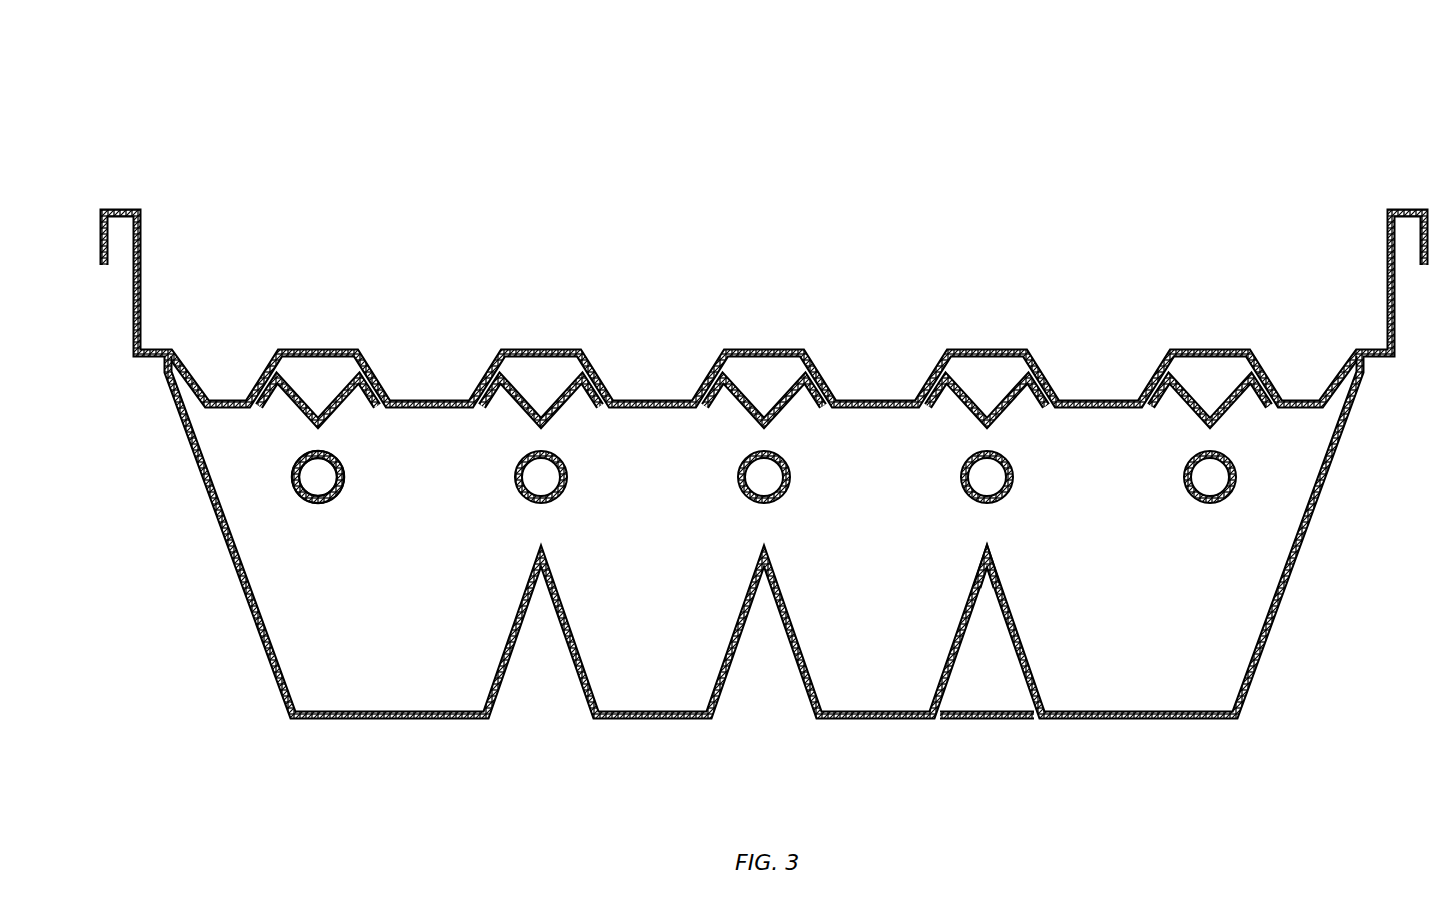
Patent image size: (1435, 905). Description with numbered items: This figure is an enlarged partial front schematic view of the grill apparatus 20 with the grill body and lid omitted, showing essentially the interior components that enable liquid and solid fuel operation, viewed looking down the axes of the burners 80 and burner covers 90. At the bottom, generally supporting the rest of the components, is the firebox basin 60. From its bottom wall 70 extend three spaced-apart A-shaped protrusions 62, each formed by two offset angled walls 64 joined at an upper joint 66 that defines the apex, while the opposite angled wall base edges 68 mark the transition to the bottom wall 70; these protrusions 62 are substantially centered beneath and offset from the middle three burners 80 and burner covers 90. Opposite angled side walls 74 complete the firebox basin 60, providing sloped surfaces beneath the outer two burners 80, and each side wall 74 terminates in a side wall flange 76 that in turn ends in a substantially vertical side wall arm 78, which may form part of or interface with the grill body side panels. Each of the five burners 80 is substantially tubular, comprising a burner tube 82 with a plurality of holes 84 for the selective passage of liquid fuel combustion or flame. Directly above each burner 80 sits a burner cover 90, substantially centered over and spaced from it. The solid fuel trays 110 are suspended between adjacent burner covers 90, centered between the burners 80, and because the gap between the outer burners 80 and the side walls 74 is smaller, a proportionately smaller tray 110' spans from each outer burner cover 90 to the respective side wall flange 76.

The grill apparatus 20 is at (1100, 180).
The firebox basin 60 is at (771, 583).
The protrusion 62 is at (488, 630).
The angled wall 64 is at (1010, 633).
The upper joint 66 is at (988, 541).
The angled wall base edge 68 is at (937, 720).
The bottom wall 70 is at (362, 720).
The side wall 74 is at (257, 625).
The side wall flange 76 is at (150, 360).
The side wall arm 78 is at (118, 210).
The burner 80 is at (201, 523).
The burner tube 82 is at (315, 505).
The hole 84 is at (297, 461).
The burner cover 90 is at (1018, 430).
The solid fuel tray 110 is at (1094, 363).
The smaller solid fuel tray 110' is at (525, 329).